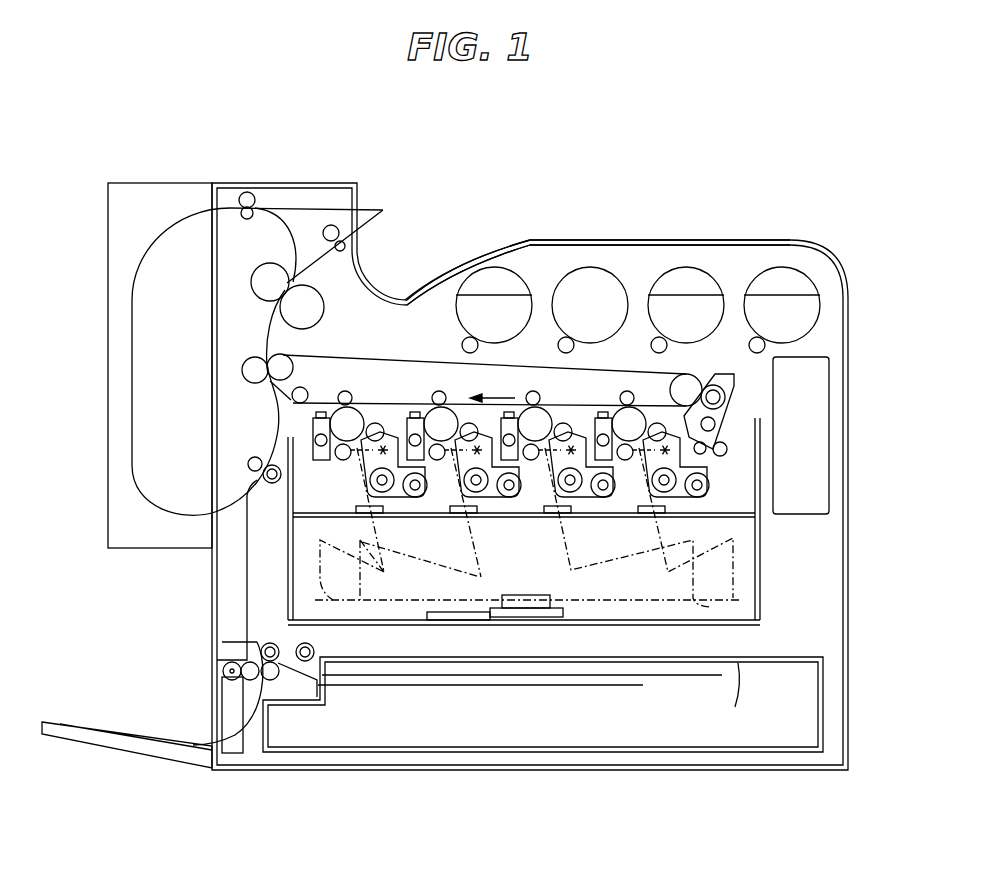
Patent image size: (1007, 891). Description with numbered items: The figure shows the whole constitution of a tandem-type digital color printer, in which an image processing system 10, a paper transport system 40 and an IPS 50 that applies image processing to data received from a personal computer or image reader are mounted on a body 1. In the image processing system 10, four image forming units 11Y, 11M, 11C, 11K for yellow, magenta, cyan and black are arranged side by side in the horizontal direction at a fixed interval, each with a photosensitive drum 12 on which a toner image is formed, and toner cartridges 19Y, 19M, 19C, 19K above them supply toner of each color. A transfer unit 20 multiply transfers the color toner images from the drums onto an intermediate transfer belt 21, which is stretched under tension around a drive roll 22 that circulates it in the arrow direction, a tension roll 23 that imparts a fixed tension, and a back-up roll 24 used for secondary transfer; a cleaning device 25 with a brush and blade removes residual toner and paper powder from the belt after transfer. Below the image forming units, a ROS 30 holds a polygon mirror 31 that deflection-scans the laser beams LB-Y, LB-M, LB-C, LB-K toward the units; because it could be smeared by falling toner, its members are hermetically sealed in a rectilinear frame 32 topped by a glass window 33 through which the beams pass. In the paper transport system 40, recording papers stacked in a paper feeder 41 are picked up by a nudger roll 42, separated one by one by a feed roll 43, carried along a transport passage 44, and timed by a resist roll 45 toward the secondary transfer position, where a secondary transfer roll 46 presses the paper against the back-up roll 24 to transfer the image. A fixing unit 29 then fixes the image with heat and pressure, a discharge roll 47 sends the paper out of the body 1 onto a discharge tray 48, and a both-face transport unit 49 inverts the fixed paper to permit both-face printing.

The body 1 is at (896, 281).
The image processing system 10 is at (740, 263).
The image forming unit 11K is at (358, 476).
The image forming unit 11C is at (493, 499).
The image forming unit 11M is at (587, 499).
The image forming unit 11Y is at (721, 491).
The photosensitive drum 12 is at (603, 407).
The toner cartridge 19K is at (490, 267).
The toner cartridge 19C is at (596, 267).
The toner cartridge 19M is at (685, 267).
The toner cartridge 19Y is at (790, 267).
The transfer unit 20 is at (400, 336).
The intermediate transfer belt 21 is at (388, 402).
The drive roll 22 is at (698, 378).
The tension roll 23 is at (310, 392).
The back-up roll 24 is at (295, 352).
The cleaning device 25 is at (739, 396).
The fixing unit 29 is at (266, 265).
The ROS 30 is at (764, 580).
The polygon mirror 31 is at (533, 595).
The frame 32 is at (766, 546).
The window 33 is at (443, 511).
The paper transport system 40 is at (238, 557).
The paper feeder 41 is at (824, 690).
The nudger roll 42 is at (297, 648).
The feed roll 43 is at (222, 642).
The transport passage 44 is at (243, 593).
The resist roll 45 is at (252, 458).
The secondary transfer roll 46 is at (243, 370).
The discharge roll 47 is at (331, 224).
The discharge tray 48 is at (545, 238).
The both-face transport unit 49 is at (109, 367).
The IPS 50 is at (820, 432).
The laser beam LB-K is at (340, 630).
The laser beam LB-C is at (408, 630).
The laser beam LB-M is at (711, 610).
The laser beam LB-Y is at (764, 608).